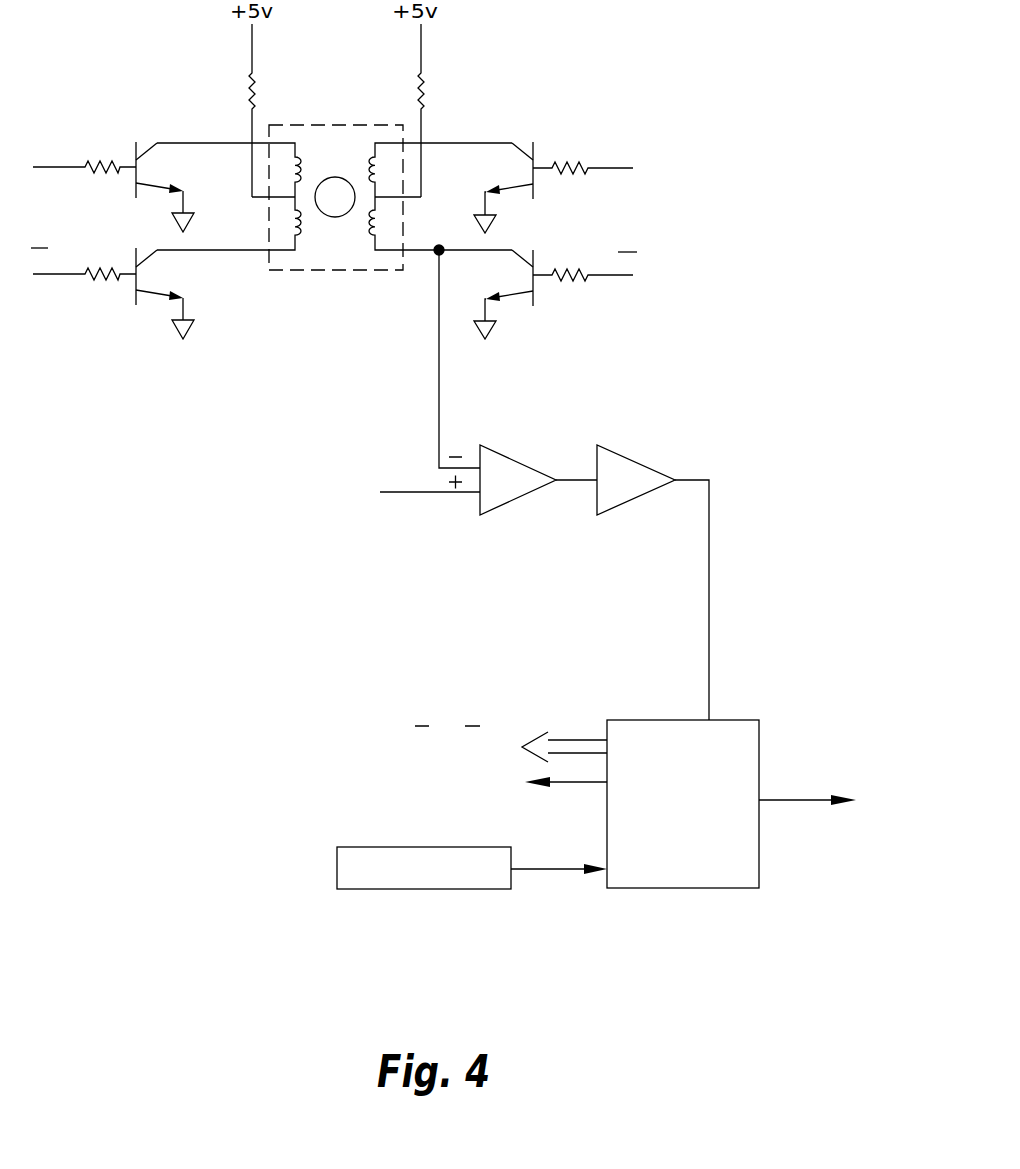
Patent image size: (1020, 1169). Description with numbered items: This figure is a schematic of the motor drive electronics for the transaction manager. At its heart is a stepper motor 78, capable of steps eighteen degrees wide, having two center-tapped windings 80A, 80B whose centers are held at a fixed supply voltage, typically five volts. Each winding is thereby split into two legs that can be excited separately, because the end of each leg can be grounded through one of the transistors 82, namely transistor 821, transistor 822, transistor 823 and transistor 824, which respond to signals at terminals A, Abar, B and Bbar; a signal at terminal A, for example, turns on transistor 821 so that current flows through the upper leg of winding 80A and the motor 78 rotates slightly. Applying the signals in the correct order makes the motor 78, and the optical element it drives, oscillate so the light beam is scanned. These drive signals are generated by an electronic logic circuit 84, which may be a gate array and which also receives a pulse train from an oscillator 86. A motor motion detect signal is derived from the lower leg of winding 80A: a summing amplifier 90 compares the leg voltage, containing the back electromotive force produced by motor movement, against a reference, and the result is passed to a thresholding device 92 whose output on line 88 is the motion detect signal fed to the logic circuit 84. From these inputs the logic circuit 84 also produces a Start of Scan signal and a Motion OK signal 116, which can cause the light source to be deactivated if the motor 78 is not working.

The stepper motor 78 is at (292, 125).
The winding 80A is at (354, 142).
The winding 80B is at (290, 252).
The transistors 82 is at (334, 226).
The transistor 821 is at (537, 150).
The transistor 822 is at (537, 303).
The transistor 823 is at (136, 147).
The transistor 824 is at (136, 301).
The electronic logic circuit 84 is at (743, 720).
The oscillator 86 is at (337, 866).
The motion signal line 88 is at (709, 553).
The summing amplifier 90 is at (527, 497).
The thresholding device 92 is at (637, 498).
The motion OK signal 116 is at (828, 795).